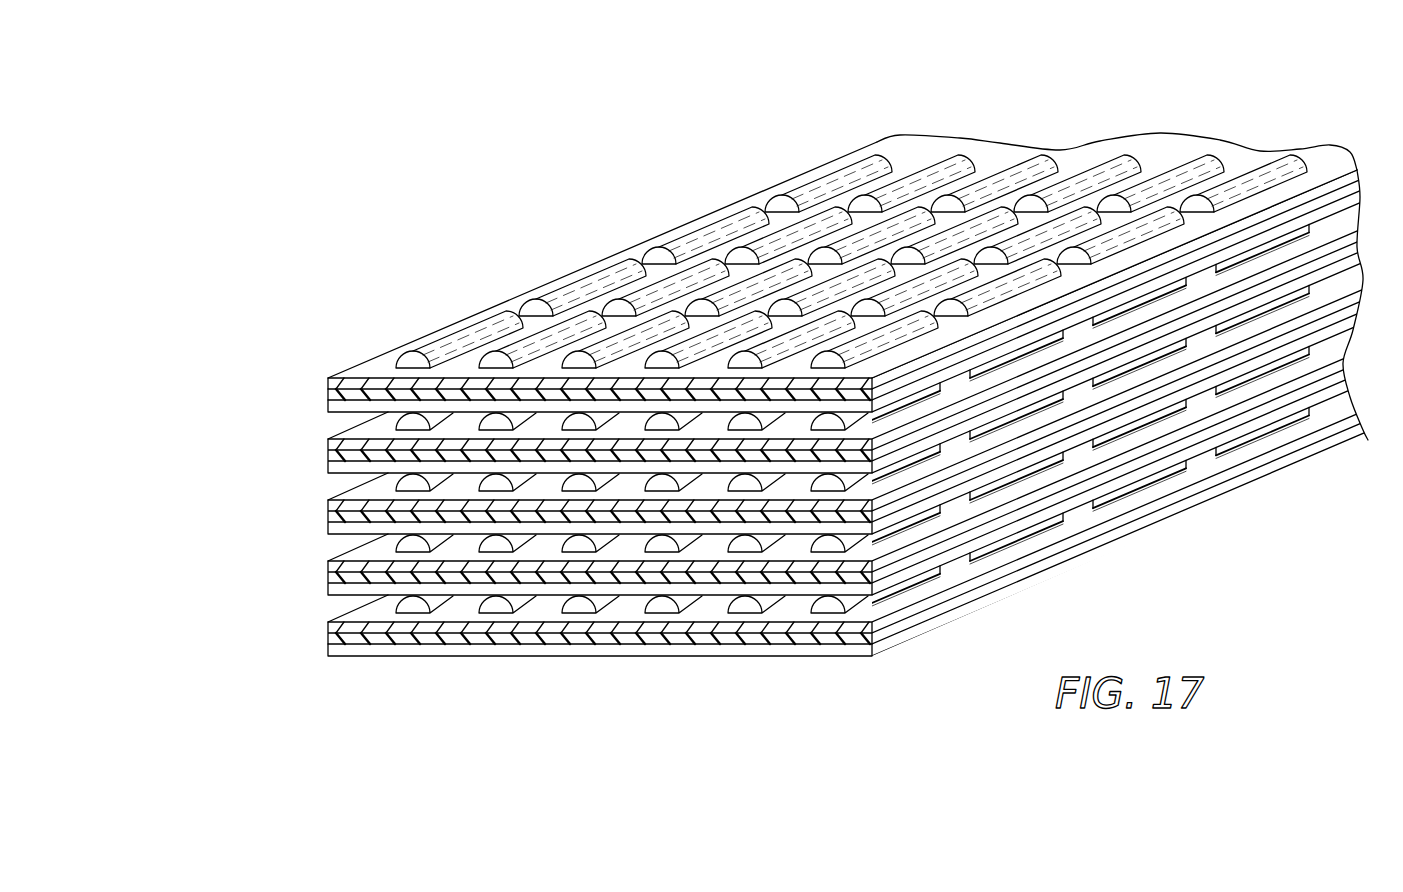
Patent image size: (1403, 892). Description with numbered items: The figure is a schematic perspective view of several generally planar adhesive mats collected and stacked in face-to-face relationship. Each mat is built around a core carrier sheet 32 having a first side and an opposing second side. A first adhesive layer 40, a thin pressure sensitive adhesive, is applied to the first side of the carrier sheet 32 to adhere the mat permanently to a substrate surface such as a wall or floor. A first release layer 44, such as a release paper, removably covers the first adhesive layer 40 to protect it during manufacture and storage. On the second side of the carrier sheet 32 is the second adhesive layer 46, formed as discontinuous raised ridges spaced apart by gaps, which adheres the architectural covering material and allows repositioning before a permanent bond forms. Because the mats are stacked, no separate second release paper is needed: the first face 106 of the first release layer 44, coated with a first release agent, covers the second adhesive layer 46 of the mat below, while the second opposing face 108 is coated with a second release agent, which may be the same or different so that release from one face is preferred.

The second adhesive layer 46 is at (329, 346).
The carrier sheet 32 is at (328, 378).
The first adhesive layer 40 is at (328, 389).
The first release layer 44 is at (328, 400).
The second opposing face 108 is at (328, 636).
The first face 106 is at (373, 656).